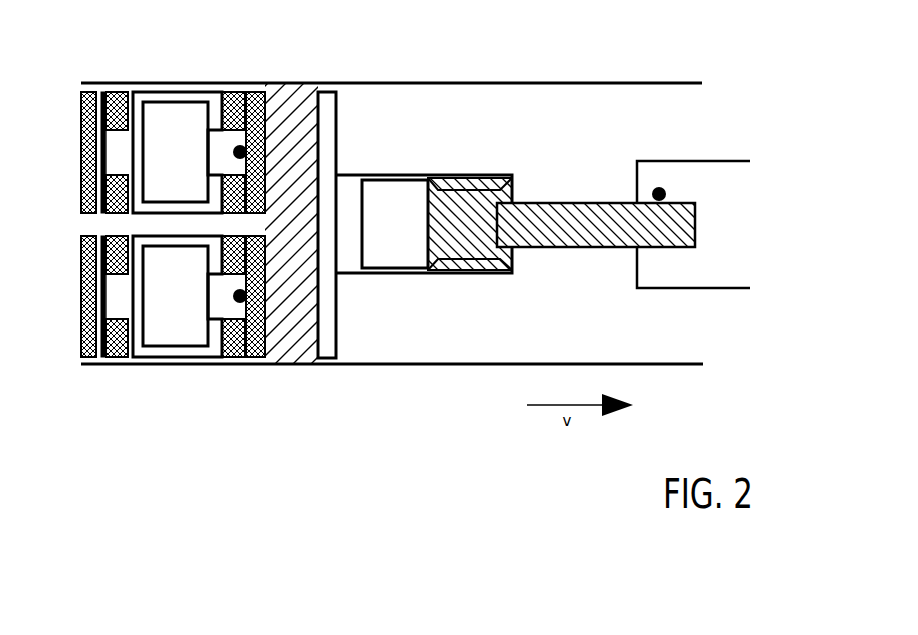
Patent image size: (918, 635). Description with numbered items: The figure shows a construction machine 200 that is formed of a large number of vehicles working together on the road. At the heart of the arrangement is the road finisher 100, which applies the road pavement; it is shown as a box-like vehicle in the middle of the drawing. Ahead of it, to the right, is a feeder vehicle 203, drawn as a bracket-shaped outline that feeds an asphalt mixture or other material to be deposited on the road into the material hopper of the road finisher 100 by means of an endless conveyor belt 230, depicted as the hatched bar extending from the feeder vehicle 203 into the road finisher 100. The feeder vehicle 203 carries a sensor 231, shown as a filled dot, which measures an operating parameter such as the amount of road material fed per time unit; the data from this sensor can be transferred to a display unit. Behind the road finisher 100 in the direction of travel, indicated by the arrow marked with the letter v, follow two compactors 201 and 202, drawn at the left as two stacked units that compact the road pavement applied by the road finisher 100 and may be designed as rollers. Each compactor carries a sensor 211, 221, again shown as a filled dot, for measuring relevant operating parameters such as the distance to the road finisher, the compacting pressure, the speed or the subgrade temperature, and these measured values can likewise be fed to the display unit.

The construction machine 200 is at (619, 63).
The compactor 201 is at (188, 358).
The compactor 202 is at (183, 95).
The sensor 211 is at (246, 297).
The sensor 221 is at (271, 130).
The road finisher 100 is at (469, 275).
The endless conveyor belt 230 is at (567, 203).
The sensor 231 is at (662, 190).
The feeder vehicle 203 is at (723, 169).